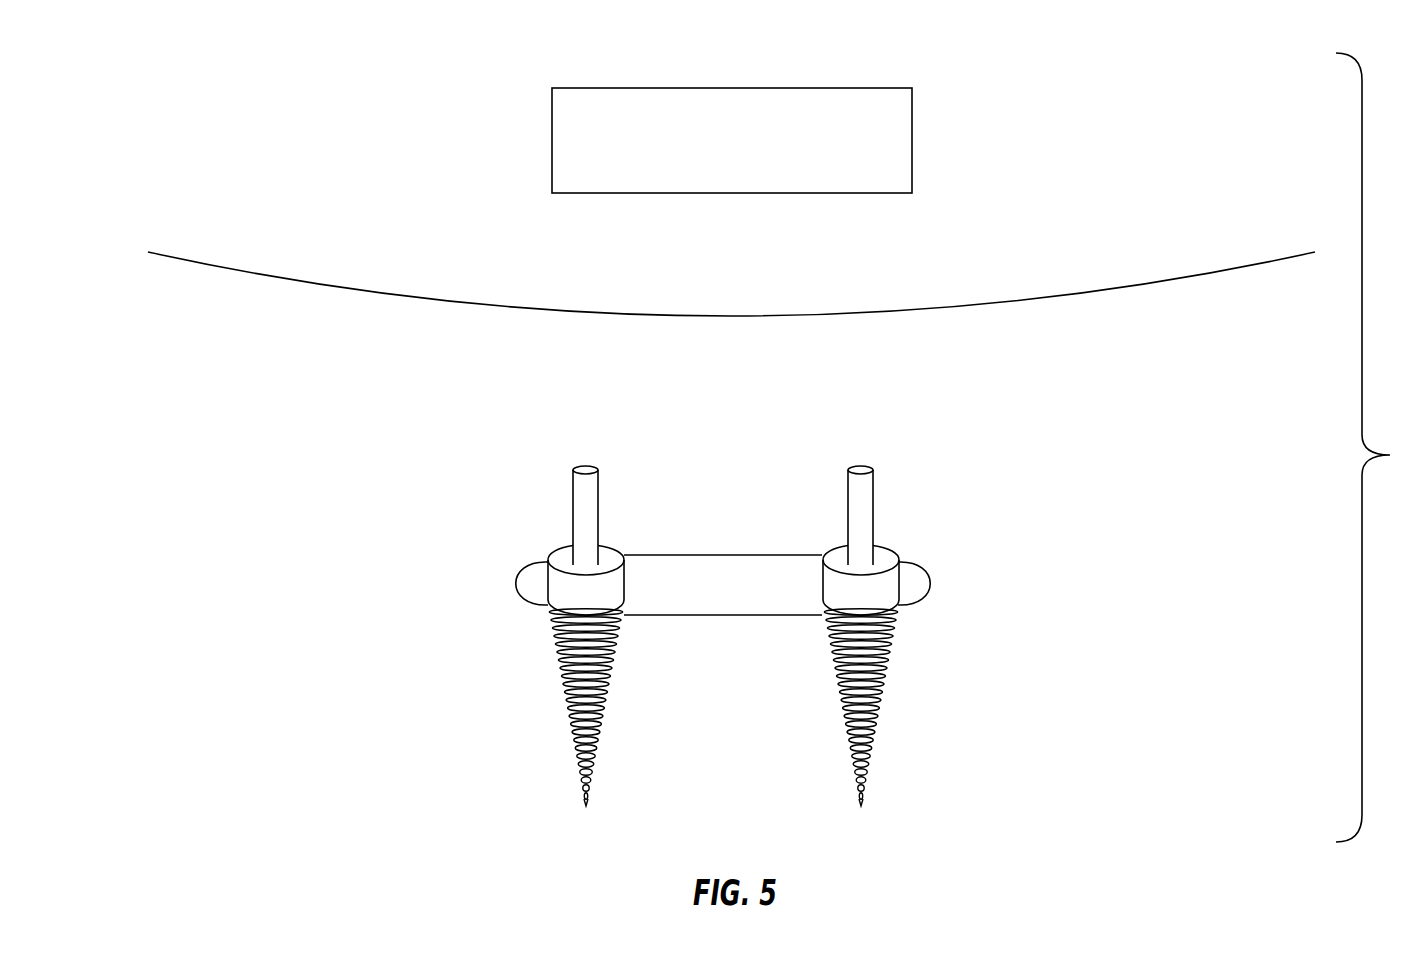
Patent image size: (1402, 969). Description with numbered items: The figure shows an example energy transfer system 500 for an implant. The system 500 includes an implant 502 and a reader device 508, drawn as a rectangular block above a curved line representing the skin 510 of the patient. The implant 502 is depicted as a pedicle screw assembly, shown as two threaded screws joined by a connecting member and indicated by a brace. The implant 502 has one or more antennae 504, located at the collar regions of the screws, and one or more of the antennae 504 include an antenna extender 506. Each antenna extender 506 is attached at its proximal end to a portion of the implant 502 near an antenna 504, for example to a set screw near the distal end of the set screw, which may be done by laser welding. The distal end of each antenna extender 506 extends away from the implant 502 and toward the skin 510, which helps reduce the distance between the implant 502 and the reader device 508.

The energy transfer system 500 is at (316, 116).
The implant 502 is at (1005, 543).
The antenna 504 is at (563, 585).
The antenna extender 506 is at (573, 487).
The reader device 508 is at (912, 140).
The skin 510 is at (1152, 283).